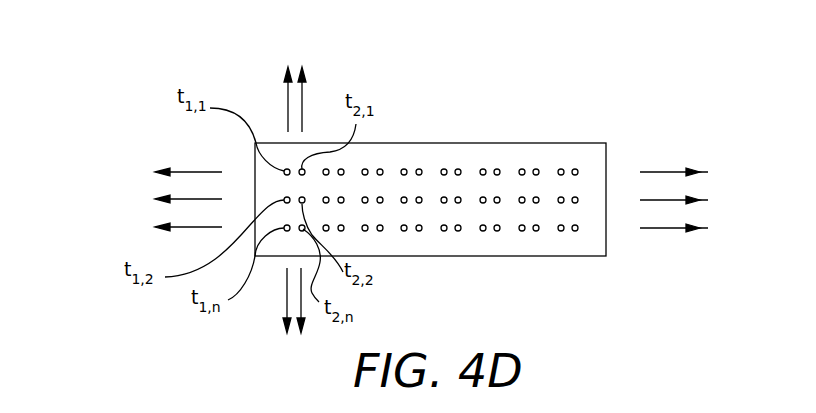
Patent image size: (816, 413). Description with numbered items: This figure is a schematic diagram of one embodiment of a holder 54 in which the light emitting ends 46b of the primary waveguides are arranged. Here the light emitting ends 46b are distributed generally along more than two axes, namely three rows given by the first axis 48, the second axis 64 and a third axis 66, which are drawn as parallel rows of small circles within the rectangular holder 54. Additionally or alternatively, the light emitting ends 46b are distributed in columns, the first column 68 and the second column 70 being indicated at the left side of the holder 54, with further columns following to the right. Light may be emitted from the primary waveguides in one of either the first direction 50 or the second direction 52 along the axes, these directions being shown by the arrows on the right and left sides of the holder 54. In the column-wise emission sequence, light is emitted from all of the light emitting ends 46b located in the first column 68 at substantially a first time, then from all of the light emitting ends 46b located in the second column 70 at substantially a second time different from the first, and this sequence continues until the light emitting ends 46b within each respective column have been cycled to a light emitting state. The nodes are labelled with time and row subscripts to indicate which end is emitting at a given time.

The holder 54 is at (430, 143).
The light emitting ends 46b is at (522, 168).
The first column 68 is at (286, 99).
The second column 70 is at (304, 118).
The second direction 52 is at (164, 170).
The first axis 48 is at (665, 172).
The first direction 50 is at (697, 170).
The second axis 64 is at (673, 200).
The third axis 66 is at (673, 229).